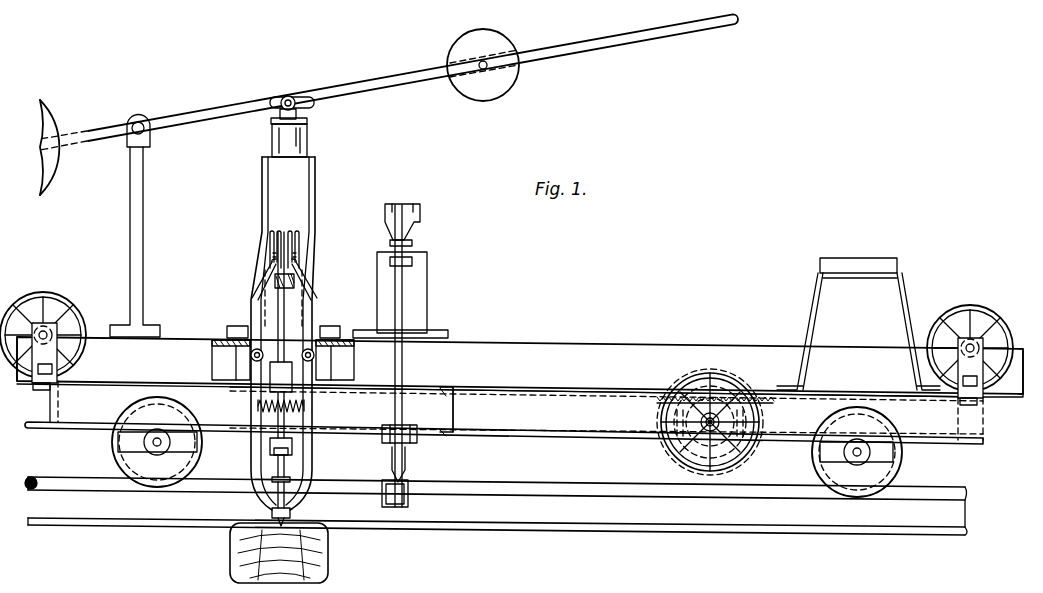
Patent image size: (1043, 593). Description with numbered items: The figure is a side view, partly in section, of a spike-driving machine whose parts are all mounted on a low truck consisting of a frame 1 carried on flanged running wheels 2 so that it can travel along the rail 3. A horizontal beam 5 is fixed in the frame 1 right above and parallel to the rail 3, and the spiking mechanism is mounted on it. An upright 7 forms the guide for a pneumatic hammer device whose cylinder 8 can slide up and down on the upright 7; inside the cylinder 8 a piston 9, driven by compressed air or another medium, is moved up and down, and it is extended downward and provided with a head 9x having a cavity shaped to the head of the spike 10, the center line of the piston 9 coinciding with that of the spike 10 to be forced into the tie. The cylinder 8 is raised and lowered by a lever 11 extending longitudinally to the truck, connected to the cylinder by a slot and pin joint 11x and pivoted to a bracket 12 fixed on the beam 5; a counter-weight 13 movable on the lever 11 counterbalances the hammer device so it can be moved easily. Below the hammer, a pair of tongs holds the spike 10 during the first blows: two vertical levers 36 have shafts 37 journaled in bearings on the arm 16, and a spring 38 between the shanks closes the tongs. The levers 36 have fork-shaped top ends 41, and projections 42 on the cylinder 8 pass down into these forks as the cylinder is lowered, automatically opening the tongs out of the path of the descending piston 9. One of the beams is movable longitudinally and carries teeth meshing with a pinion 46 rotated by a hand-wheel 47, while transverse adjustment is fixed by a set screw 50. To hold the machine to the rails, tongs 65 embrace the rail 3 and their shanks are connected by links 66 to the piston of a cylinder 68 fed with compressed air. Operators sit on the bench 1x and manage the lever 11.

The frame 1 is at (504, 412).
The bench 1x is at (866, 262).
The running wheels 2 is at (116, 452).
The rail 3 is at (496, 506).
The horizontal beam 5 is at (520, 367).
The upright 7 is at (316, 187).
The cylinder 8 is at (289, 158).
The piston 9 is at (281, 312).
The head 9x is at (294, 448).
The spike 10 is at (290, 500).
The lever 11 is at (378, 78).
The slot and pin joint 11x is at (288, 96).
The bracket 12 is at (143, 268).
The counter-weight 13 is at (68, 122).
The arm 16 is at (212, 352).
The vertical levers 36 is at (258, 406).
The shafts 37 is at (248, 332).
The spring 38 is at (270, 402).
The fork-shaped top ends 41 is at (268, 232).
The projections 42 is at (272, 256).
The pinion 46 is at (738, 460).
The hand-wheel 47 is at (674, 455).
The set screw 50 is at (1010, 338).
The tongs 65 is at (403, 314).
The links 66 is at (414, 236).
The cylinder 68 is at (420, 285).